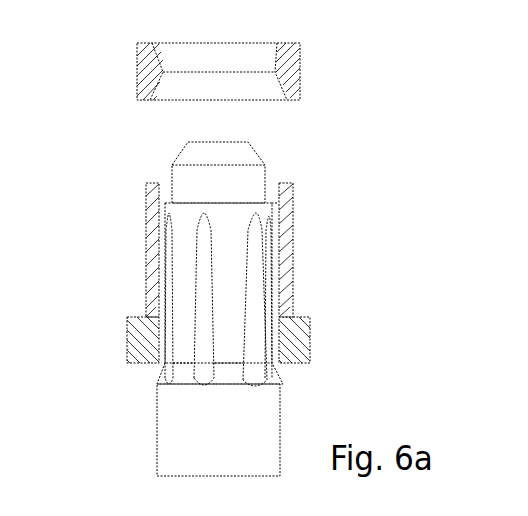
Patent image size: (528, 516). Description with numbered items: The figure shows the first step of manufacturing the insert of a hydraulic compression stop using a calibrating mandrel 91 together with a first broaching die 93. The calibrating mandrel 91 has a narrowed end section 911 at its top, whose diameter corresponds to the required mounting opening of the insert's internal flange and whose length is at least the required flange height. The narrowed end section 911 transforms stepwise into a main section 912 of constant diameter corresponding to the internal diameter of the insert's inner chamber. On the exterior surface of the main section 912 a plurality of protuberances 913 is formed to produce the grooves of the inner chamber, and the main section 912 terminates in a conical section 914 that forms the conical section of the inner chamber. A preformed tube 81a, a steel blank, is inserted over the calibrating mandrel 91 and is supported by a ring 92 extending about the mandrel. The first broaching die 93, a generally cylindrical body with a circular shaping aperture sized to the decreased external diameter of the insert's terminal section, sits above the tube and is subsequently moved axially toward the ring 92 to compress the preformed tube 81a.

The first broaching die 93 is at (283, 72).
The preformed tube 81a is at (290, 205).
The ring 92 is at (297, 345).
The calibrating mandrel 91 is at (265, 413).
The narrowed end section 911 is at (228, 173).
The main section 912 is at (235, 249).
The protuberances 913 is at (254, 296).
The conical section 914 is at (277, 373).